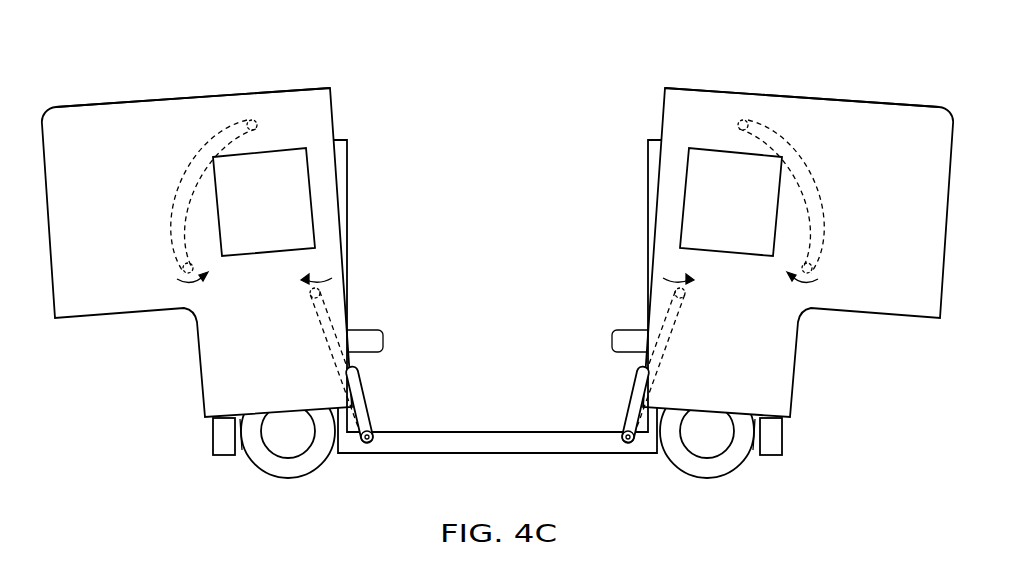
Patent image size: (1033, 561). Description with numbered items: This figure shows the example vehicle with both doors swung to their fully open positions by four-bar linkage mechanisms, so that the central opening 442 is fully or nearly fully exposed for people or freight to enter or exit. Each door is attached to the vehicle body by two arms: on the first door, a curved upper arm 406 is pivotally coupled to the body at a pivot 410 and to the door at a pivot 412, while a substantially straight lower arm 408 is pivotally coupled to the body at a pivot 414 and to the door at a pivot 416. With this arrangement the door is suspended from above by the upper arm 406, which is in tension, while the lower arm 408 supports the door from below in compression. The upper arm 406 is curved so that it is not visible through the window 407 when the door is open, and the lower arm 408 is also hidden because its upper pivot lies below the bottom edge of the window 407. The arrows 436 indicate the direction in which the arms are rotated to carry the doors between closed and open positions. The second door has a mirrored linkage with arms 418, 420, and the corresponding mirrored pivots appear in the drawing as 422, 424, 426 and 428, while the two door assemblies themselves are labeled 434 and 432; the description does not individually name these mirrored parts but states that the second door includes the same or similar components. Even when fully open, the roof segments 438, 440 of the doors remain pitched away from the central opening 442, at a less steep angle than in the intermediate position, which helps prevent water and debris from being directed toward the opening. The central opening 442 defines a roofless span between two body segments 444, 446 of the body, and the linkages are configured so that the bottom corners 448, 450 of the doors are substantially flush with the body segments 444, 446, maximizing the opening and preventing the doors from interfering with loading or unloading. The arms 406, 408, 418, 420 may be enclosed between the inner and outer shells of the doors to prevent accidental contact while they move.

The upper arm 406 is at (175, 196).
The window 407 is at (497, 155).
The lower arm 408 is at (395, 405).
The pivot 410 is at (240, 88).
The pivot 412 is at (148, 278).
The pivot 414 is at (377, 475).
The pivot 416 is at (275, 306).
The arm 418 is at (821, 196).
The arm 420 is at (599, 405).
The upper guide pin (right) 422 is at (753, 88).
The lower guide pin (right) 424 is at (847, 277).
The arm pin (right) 426 is at (717, 305).
The pivot (right) 428 is at (617, 475).
The right door 432 is at (942, 96).
The left door 434 is at (53, 96).
The arrows 436 is at (671, 275).
The roof segment 438 is at (193, 64).
The roof segment 440 is at (802, 64).
The central opening 442 is at (549, 88).
The body segment 444 is at (183, 436).
The body segment 446 is at (813, 436).
The bottom corner 448 is at (384, 365).
The bottom corner 450 is at (598, 362).